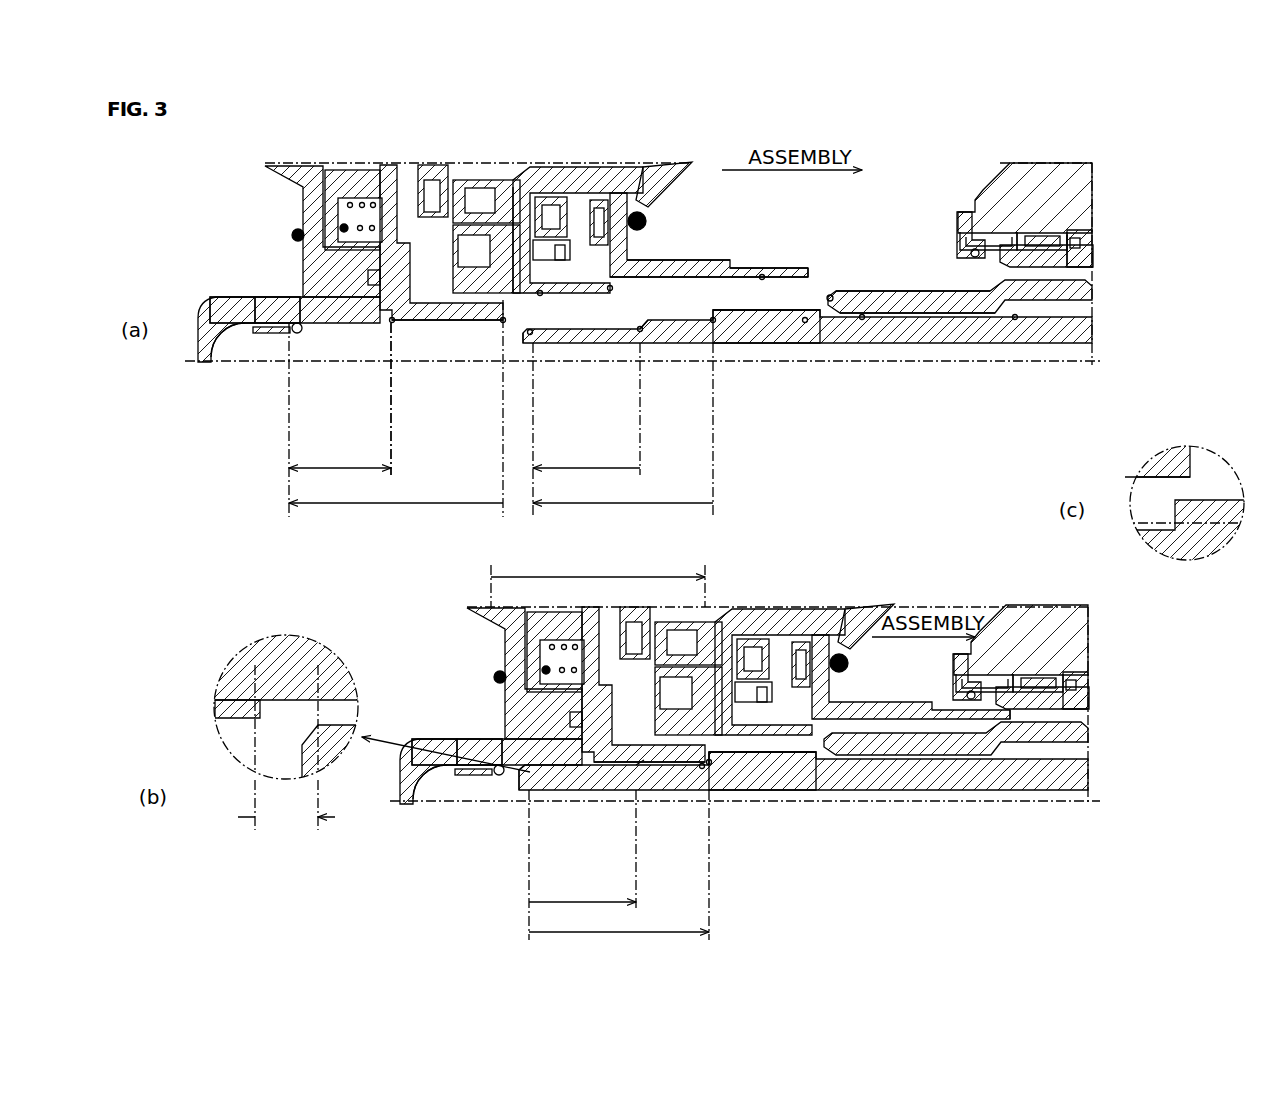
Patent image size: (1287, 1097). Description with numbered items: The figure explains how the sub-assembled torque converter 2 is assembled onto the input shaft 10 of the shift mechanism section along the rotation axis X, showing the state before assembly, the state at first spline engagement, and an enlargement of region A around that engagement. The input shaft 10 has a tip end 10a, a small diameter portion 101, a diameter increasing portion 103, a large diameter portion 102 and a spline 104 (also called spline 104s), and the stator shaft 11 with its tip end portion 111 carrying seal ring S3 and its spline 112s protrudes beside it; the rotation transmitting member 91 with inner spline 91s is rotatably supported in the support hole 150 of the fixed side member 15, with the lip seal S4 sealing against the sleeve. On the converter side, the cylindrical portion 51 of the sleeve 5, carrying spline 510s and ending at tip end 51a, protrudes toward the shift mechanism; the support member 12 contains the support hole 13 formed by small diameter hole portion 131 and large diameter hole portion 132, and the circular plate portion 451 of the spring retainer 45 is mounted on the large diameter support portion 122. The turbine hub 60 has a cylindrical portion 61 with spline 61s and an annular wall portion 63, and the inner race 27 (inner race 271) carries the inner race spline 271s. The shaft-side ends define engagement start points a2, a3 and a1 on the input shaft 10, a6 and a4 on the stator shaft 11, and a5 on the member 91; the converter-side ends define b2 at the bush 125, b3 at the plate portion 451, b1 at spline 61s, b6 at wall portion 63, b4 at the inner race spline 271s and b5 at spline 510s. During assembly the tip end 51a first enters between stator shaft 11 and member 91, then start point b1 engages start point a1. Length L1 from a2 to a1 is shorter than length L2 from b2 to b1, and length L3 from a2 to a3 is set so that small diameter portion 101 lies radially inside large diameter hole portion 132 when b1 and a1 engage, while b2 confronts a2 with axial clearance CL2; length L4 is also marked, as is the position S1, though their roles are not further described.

The torque converter 2 is at (664, 144).
The sleeve 5 is at (660, 260).
The input shaft 10 is at (1096, 333).
The tip end 10a is at (519, 790).
The stator shaft 11 is at (1096, 290).
The support member 12 is at (204, 298).
The support hole 13 is at (202, 292).
The fixed side member 15 is at (1012, 165).
The inner race 27 is at (554, 165).
The spring retainer 45 is at (383, 172).
The cylindrical portion 51 is at (700, 260).
The tip end 51a is at (806, 268).
The turbine hub 60 is at (455, 172).
The cylindrical portion 61 is at (412, 292).
The spline 61s is at (450, 322).
The annular wall portion 63 is at (470, 280).
The rotation transmitting member 91 is at (1092, 235).
The spline 91s is at (1060, 232).
The small diameter portion 101 is at (560, 345).
The large diameter portion 102 is at (655, 345).
The diameter increasing portion 103 is at (625, 790).
The spline 104 is at (775, 345).
The spline 104s is at (760, 312).
The tip end portion 111 is at (840, 345).
The spline 112s is at (910, 291).
The large diameter support portion 122 is at (295, 334).
The bush 125 is at (266, 347).
The small diameter hole portion 131 is at (235, 297).
The large diameter hole portion 132 is at (275, 297).
The support hole 150 is at (990, 233).
The inner race 271 is at (530, 165).
The cover flange 271s is at (614, 170).
The circular plate portion 451 is at (368, 277).
The spline 510s is at (745, 266).
The engagement start point a1 is at (713, 322).
The engagement start point a2 is at (532, 334).
The engagement start point a3 is at (638, 332).
The engagement start point a4 is at (862, 320).
The engagement start point a5 is at (1015, 320).
The engagement start point a6 is at (805, 322).
The initial engagement start point b1 is at (502, 323).
The engagement start point b2 is at (301, 331).
The engagement start point b3 is at (394, 323).
The engagement start point b4 is at (613, 289).
The engagement start point b5 is at (762, 279).
The engagement start point b6 is at (542, 294).
The gap S1 is at (390, 330).
The seal ring S3 is at (831, 297).
The lip seal S4 is at (957, 238).
The length L1 is at (621, 641).
The length L2 is at (497, 453).
The length L3 is at (584, 641).
The length L4 is at (340, 420).
The clearance CL2 is at (286, 805).
The region A is at (702, 766).
The rotation axis X is at (626, 581).